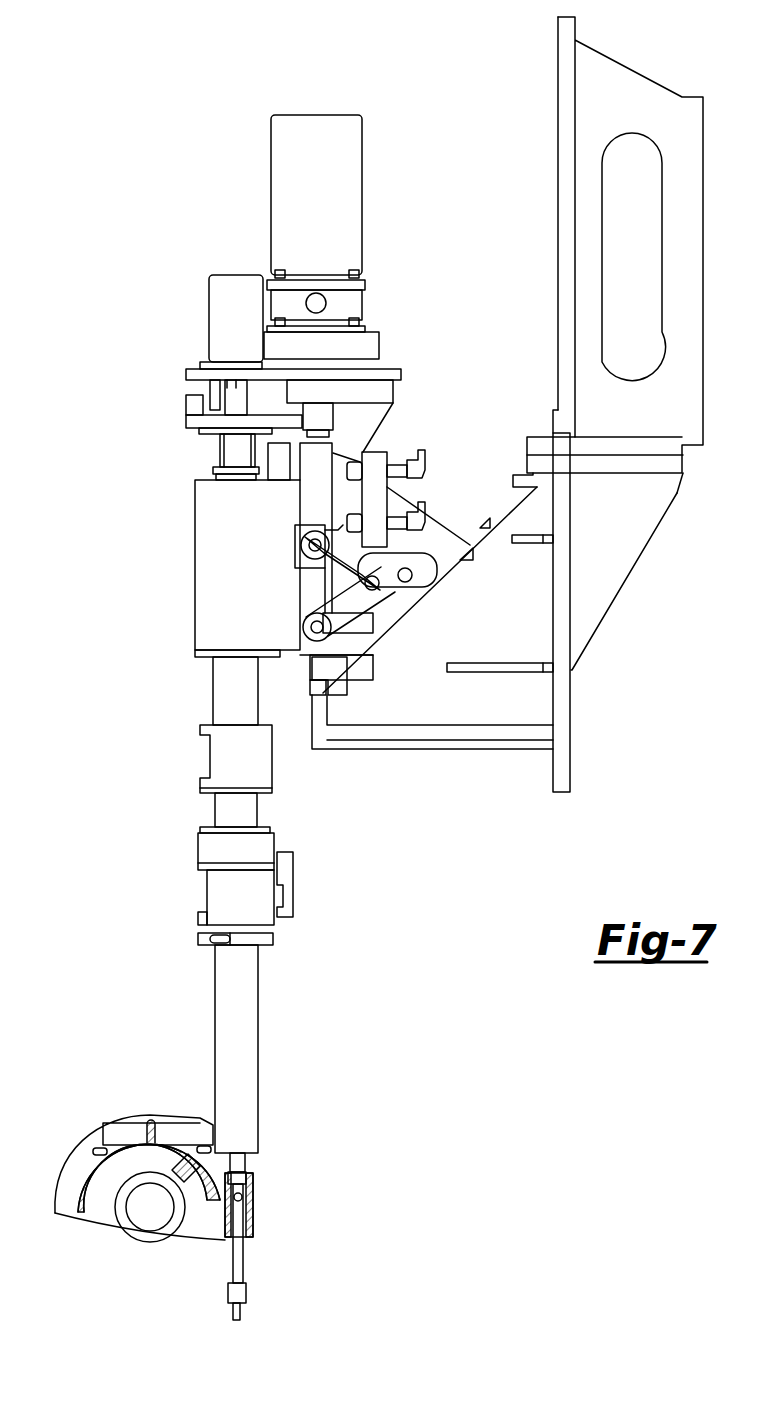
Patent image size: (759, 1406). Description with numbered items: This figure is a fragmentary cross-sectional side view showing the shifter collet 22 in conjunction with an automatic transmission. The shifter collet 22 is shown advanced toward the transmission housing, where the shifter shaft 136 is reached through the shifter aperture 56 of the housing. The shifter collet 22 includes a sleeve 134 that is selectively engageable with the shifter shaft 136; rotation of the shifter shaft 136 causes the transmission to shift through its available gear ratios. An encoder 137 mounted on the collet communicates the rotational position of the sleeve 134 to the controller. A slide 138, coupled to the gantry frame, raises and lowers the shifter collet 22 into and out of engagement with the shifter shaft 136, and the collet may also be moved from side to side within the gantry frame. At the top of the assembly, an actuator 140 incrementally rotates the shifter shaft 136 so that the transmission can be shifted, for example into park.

The shifter collet 22 is at (88, 583).
The shifter aperture 56 is at (248, 1202).
The sleeve 134 is at (255, 1050).
The shifter shaft 136 is at (233, 1263).
The encoder 137 is at (210, 327).
The slide 138 is at (565, 293).
The actuator 140 is at (258, 190).